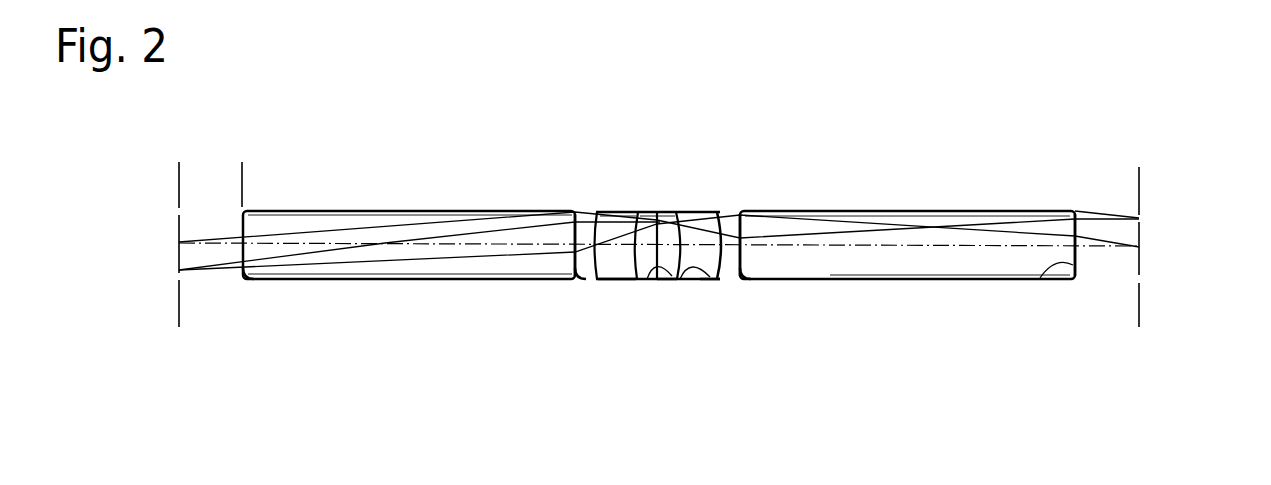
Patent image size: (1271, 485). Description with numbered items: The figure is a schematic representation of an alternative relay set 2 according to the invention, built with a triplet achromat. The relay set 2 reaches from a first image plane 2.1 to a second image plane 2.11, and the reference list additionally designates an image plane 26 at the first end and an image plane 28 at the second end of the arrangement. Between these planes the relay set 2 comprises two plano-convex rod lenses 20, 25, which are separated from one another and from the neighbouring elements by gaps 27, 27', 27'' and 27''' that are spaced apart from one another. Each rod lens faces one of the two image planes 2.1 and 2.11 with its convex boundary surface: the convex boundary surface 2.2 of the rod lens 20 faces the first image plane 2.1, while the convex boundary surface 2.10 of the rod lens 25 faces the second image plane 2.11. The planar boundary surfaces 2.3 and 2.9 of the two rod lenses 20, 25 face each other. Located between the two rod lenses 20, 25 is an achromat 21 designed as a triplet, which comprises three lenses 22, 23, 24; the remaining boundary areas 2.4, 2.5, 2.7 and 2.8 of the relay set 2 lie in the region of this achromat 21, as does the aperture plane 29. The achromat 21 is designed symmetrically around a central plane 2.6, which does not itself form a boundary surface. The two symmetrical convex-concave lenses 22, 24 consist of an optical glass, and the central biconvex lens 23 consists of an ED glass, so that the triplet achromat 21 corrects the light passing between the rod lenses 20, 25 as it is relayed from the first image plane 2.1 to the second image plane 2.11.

The relay set 2 is at (1027, 170).
The first image plane 2.1 is at (179, 175).
The convex boundary surface 2.2 is at (247, 167).
The planar boundary surface 2.3 is at (577, 210).
The boundary area of the relay set 2.4 is at (597, 210).
The boundary area of the relay set 2.5 is at (617, 279).
The central plane 2.6 is at (665, 282).
The boundary area of the relay set 2.7 is at (707, 282).
The boundary area of the relay set 2.8 is at (728, 212).
The planar boundary surface 2.9 is at (768, 213).
The convex boundary surface 2.10 is at (1048, 268).
The second image plane 2.11 is at (1139, 185).
The plano-convex rod lens 20 is at (382, 208).
The triplet achromat 21 is at (672, 282).
The lens made of optical glass 22 is at (620, 208).
The lens made of ED glass 23 is at (648, 208).
The lens made of optical glass 24 is at (692, 210).
The plano-convex rod lens 25 is at (870, 212).
The image plane 26 is at (179, 307).
The gap 27 is at (256, 312).
The gap 27' is at (557, 312).
The gap 27'' is at (799, 312).
The gap 27''' is at (1095, 289).
The image plane 28 is at (1139, 312).
The aperture plane 29 is at (642, 282).